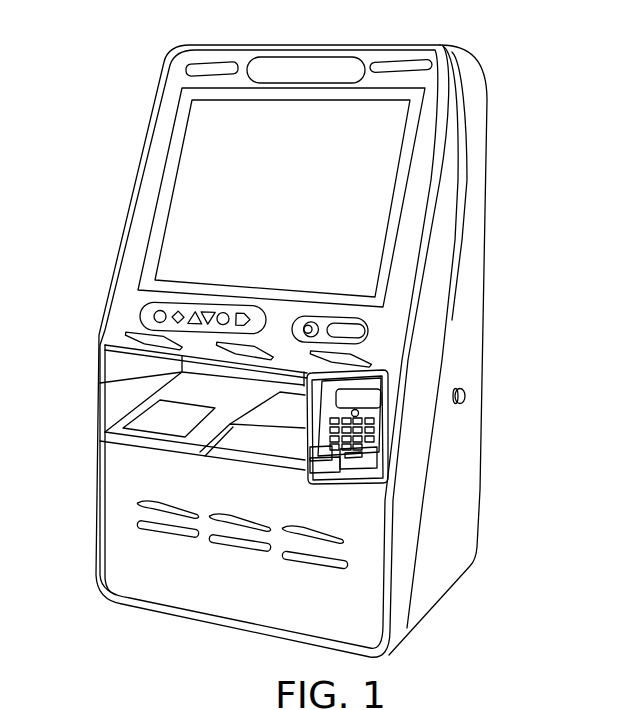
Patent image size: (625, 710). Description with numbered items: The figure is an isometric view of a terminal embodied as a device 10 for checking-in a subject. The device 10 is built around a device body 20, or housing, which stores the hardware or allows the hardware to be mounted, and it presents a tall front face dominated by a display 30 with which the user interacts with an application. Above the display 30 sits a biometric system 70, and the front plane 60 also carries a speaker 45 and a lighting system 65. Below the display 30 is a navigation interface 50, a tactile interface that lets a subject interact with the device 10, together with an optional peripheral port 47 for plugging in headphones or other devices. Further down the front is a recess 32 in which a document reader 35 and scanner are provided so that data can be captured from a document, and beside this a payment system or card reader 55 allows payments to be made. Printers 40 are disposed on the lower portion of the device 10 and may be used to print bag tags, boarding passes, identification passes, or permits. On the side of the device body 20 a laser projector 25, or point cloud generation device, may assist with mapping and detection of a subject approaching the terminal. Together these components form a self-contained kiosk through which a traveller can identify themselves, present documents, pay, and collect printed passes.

The device 10 is at (545, 52).
The device body 20 is at (442, 207).
The laser projector 25 is at (465, 396).
The display 30 is at (203, 193).
The recess 32 is at (198, 365).
The document reader 35 is at (255, 440).
The printers 40 is at (230, 542).
The speaker 45 is at (372, 64).
The peripheral port 47 is at (372, 319).
The navigation interface 50 is at (142, 316).
The card reader 55 is at (372, 468).
The front plane 60 is at (425, 89).
The lighting system 65 is at (370, 357).
The biometric system 70 is at (275, 68).